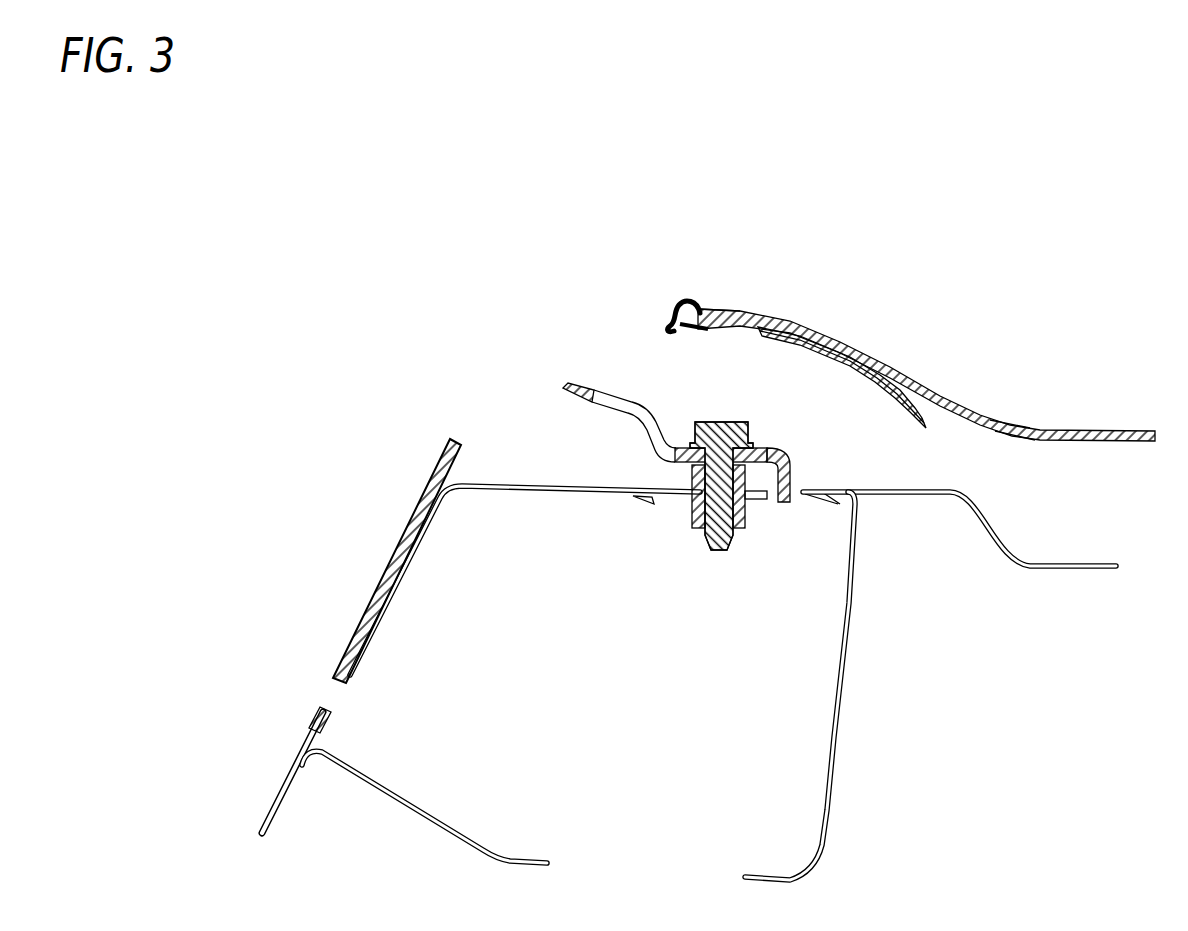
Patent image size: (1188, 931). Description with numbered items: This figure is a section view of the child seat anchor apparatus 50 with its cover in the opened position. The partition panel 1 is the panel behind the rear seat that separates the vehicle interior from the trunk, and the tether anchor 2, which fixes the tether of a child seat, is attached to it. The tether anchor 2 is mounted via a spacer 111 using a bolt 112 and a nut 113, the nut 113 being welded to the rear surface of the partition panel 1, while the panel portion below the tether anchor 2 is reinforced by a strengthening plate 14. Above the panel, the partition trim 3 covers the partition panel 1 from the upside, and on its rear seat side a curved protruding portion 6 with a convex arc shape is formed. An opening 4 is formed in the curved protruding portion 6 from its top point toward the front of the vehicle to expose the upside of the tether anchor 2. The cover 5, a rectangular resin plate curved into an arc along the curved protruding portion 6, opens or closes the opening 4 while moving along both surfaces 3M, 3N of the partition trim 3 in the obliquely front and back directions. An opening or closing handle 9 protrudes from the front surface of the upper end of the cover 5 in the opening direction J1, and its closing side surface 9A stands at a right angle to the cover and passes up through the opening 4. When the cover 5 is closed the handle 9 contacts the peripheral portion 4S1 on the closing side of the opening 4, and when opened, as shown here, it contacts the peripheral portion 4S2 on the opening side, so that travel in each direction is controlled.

The partition panel 1 is at (1029, 567).
The tether anchor 2 is at (647, 412).
The partition trim 3 is at (922, 344).
The surface of the partition trim 3M is at (1008, 428).
The surface of the partition trim 3N is at (1013, 442).
The opening 4 is at (435, 455).
The peripheral portion on the closing side of the opening 4S1 is at (456, 440).
The peripheral portion on the opening side of the opening 4S2 is at (699, 308).
The cover 5 is at (842, 285).
The curved protruding portion 6 is at (800, 322).
The opening or closing handle 9 is at (650, 250).
The closing side surface 9A is at (672, 308).
The strengthening plate 14 is at (757, 500).
The child seat anchor apparatus 50 is at (618, 180).
The spacer 111 is at (688, 478).
The bolt 112 is at (748, 432).
The nut 113 is at (695, 523).
The opening direction of the cover J1 is at (560, 100).